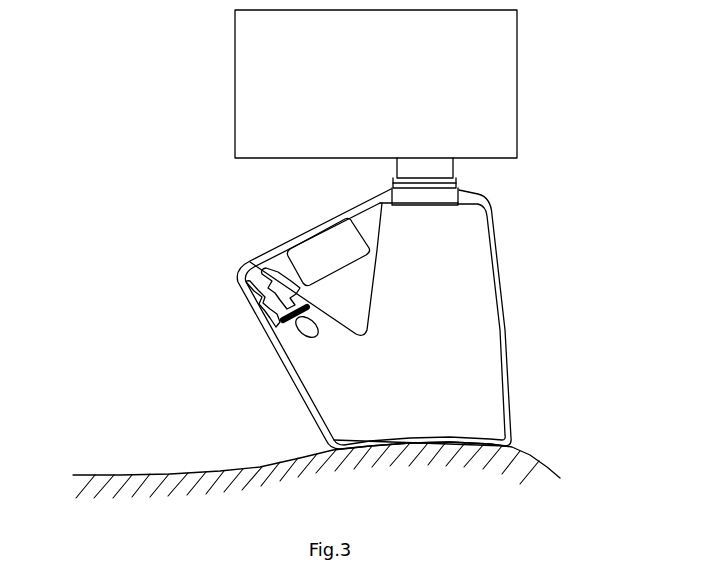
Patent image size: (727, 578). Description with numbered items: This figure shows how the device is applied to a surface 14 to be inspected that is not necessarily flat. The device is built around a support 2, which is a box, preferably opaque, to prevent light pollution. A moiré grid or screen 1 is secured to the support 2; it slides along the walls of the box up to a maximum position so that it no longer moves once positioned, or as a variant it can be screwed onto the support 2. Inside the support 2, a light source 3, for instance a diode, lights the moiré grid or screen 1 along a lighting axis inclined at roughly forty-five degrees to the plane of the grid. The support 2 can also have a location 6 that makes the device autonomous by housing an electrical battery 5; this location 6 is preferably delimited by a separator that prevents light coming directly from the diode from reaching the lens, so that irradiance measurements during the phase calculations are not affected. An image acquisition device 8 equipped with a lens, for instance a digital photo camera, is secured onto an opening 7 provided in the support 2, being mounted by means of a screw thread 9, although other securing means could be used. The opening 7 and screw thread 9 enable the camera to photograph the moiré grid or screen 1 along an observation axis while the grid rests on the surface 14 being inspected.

The moiré grid or screen 1 is at (496, 446).
The support 2 is at (508, 361).
The light source 3 is at (307, 335).
The electrical battery 5 is at (333, 253).
The location 6 is at (342, 302).
The opening 7 is at (431, 199).
The image acquisition device 8 is at (477, 116).
The screw thread 9 is at (493, 198).
The surface to be inspected 14 is at (547, 467).